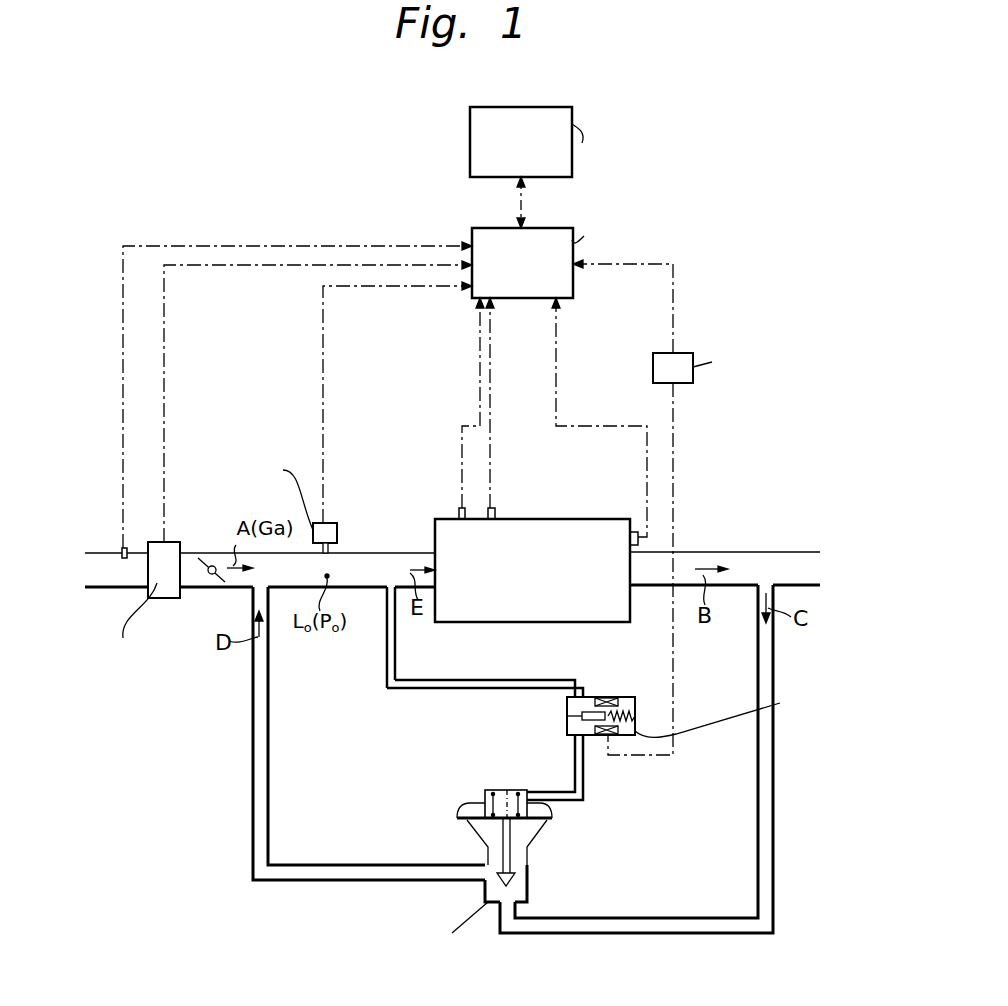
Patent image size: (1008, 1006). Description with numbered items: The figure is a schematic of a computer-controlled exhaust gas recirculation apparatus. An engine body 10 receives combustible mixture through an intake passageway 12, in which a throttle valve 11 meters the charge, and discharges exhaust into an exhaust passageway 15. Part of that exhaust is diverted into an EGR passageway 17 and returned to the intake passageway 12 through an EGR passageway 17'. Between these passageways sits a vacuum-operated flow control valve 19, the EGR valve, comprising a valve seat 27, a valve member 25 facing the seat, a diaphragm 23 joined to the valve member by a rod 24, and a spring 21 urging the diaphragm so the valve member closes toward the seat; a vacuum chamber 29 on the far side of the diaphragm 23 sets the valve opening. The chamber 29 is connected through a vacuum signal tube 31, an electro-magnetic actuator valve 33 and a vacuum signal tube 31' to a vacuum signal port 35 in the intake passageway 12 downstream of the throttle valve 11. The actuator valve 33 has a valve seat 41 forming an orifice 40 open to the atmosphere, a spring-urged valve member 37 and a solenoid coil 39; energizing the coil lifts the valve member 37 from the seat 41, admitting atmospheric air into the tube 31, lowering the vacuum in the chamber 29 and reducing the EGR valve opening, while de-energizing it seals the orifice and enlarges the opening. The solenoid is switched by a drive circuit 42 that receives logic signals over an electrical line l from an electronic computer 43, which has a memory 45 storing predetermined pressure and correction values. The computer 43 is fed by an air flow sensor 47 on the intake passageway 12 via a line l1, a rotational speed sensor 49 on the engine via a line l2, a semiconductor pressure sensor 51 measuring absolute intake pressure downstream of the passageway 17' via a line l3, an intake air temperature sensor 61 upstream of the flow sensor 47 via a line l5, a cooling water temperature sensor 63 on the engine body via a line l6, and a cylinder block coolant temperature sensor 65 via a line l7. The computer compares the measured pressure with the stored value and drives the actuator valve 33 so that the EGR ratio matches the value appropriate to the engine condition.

The memory 45 is at (529, 156).
The electronic computer 43 is at (536, 276).
The drive circuit 42 is at (723, 362).
The intake air temperature sensor 61 is at (122, 553).
The air flow sensor 47 is at (169, 598).
The throttle valve 11 is at (204, 561).
The pressure sensor 51 is at (337, 534).
The intake passageway 12 is at (396, 553).
The engine cooling water temperature sensor 63 is at (459, 512).
The cylinder block cooling water temperature sensor 65 is at (495, 512).
The engine body 10 is at (577, 519).
The rotational speed sensor 49 is at (632, 532).
The exhaust passageway 15 is at (716, 552).
The electro-magnetic actuator valve 33 is at (627, 665).
The valve member 37 is at (590, 697).
The solenoid coil 39 is at (608, 697).
The valve seat 41 is at (567, 701).
The orifice 40 is at (562, 716).
The vacuum signal port 35 is at (393, 600).
The vacuum signal tube 31' is at (485, 669).
The vacuum signal tube 31 is at (577, 767).
The flow control valve 19 is at (558, 837).
The vacuum chamber 29 is at (503, 790).
The spring 21 is at (493, 807).
The diaphragm 23 is at (468, 820).
The rod 24 is at (503, 858).
The valve member 25 is at (527, 862).
The valve seat 27 is at (520, 880).
The exhaust gas recirculation passageway 17 is at (655, 759).
The exhaust gas recirculation passageway 17' is at (369, 733).
The electrical line l is at (675, 290).
The electrical line l1 is at (165, 415).
The electrical line l2 is at (557, 392).
The electrical line l3 is at (324, 434).
The electrical line l5 is at (122, 440).
The electrical line l6 is at (461, 448).
The signal line l7 is at (491, 445).